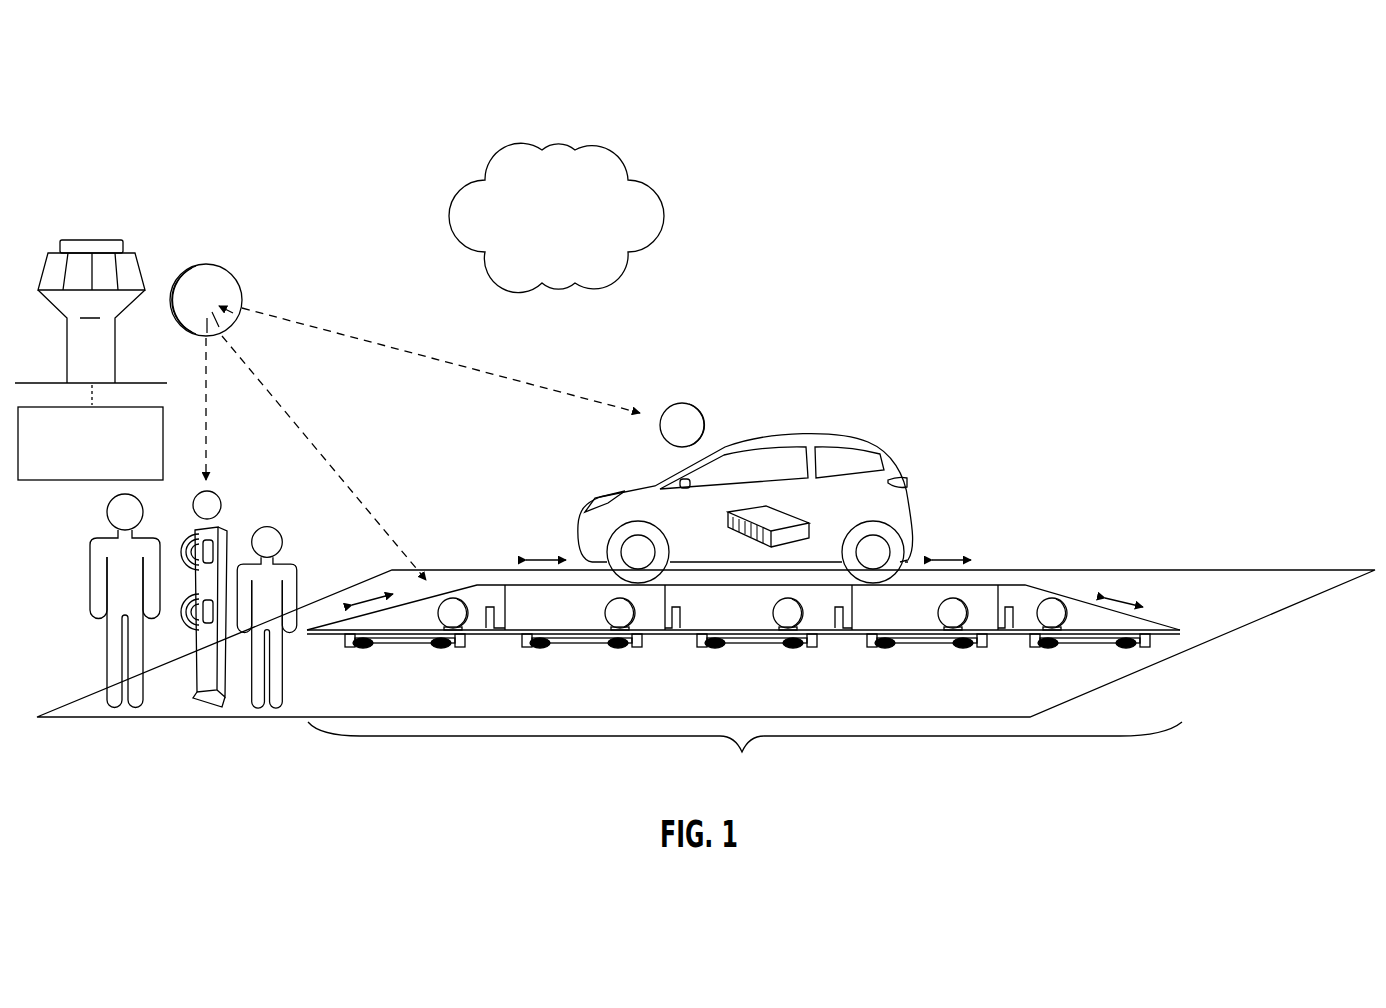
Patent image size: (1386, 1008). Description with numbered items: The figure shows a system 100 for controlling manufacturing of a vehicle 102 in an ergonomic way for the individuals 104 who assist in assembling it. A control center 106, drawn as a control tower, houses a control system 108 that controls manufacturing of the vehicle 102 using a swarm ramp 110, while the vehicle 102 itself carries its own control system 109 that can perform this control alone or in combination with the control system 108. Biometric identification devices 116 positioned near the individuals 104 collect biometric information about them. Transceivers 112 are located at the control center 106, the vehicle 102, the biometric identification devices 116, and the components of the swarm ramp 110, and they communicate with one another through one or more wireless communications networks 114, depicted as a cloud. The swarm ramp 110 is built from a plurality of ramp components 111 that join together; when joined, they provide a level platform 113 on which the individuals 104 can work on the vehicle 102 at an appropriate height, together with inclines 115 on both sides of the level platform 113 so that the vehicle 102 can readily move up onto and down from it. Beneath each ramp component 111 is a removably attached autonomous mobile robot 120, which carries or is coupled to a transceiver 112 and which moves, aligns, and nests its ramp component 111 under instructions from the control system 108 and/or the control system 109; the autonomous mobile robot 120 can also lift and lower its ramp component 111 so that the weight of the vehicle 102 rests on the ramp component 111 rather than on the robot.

The system 100 is at (158, 140).
The vehicle 102 is at (904, 460).
The individuals 104 is at (105, 640).
The control center 106 is at (105, 240).
The control system 108 is at (58, 482).
The control system 109 is at (768, 510).
The swarm ramp 110 is at (744, 687).
The ramp components 111 is at (345, 612).
The transceivers 112 is at (234, 276).
The level platform 113 is at (550, 557).
The wireless communications networks 114 is at (557, 144).
The inclines 115 is at (343, 610).
The biometric identification devices 116 is at (207, 700).
The autonomous mobile robot 120 is at (423, 646).